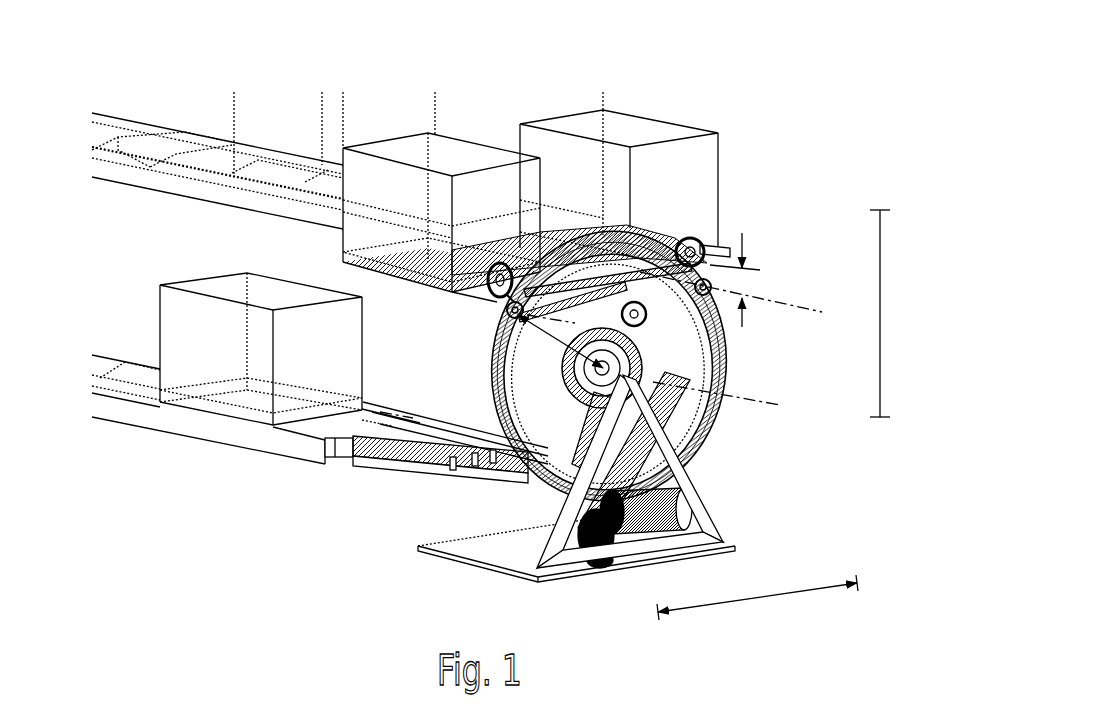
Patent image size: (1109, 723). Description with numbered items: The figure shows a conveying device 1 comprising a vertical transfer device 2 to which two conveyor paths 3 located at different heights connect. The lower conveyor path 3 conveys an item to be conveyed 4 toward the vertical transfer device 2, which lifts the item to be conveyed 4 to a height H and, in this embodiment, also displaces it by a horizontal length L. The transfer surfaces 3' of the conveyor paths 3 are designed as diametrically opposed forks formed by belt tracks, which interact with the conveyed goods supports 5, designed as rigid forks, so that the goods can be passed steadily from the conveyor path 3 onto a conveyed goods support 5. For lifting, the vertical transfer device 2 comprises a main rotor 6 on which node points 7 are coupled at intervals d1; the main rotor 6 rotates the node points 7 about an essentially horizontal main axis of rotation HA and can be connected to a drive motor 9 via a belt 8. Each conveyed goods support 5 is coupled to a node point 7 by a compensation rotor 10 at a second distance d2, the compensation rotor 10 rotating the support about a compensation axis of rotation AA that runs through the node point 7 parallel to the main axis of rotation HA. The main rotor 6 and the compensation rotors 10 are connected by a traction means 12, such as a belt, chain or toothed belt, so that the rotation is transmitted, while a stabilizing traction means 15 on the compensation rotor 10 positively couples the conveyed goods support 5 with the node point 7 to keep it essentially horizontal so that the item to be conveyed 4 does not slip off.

The conveying device 1 is at (737, 60).
The vertical transfer device 2 is at (760, 470).
The conveyor path 3 is at (294, 309).
The transfer surface 3' is at (583, 360).
The item to be conveyed 4 is at (463, 150).
The conveyed goods support 5 is at (513, 467).
The main rotor 6 is at (600, 383).
The node point 7 is at (506, 322).
The belt 8 is at (573, 452).
The drive motor 9 is at (678, 540).
The compensation rotor 10 is at (490, 295).
The traction means 12 is at (646, 315).
The stabilizing traction means 15 is at (477, 295).
The interval d1 is at (560, 342).
The second distance d2 is at (748, 275).
The compensation axis of rotation AA is at (770, 300).
The main axis of rotation HA is at (757, 400).
The height H is at (896, 313).
The horizontal length L is at (757, 612).